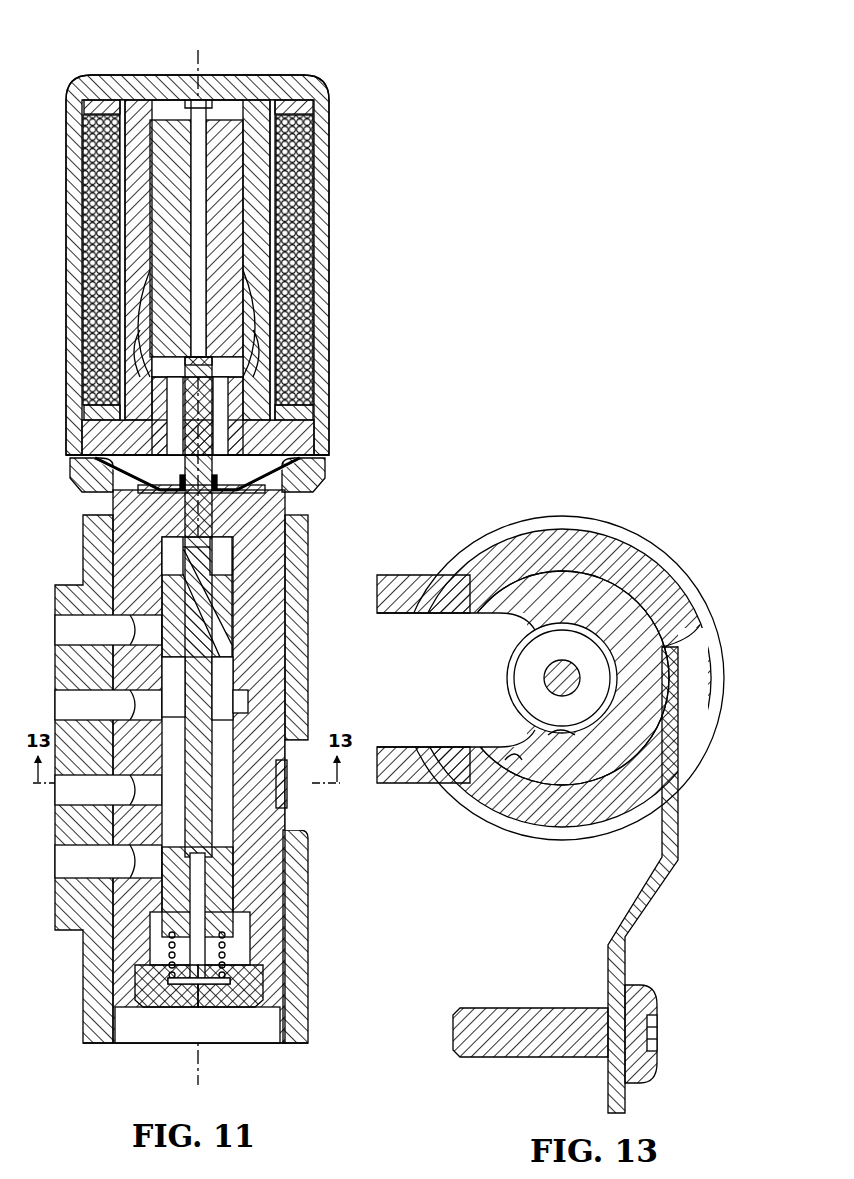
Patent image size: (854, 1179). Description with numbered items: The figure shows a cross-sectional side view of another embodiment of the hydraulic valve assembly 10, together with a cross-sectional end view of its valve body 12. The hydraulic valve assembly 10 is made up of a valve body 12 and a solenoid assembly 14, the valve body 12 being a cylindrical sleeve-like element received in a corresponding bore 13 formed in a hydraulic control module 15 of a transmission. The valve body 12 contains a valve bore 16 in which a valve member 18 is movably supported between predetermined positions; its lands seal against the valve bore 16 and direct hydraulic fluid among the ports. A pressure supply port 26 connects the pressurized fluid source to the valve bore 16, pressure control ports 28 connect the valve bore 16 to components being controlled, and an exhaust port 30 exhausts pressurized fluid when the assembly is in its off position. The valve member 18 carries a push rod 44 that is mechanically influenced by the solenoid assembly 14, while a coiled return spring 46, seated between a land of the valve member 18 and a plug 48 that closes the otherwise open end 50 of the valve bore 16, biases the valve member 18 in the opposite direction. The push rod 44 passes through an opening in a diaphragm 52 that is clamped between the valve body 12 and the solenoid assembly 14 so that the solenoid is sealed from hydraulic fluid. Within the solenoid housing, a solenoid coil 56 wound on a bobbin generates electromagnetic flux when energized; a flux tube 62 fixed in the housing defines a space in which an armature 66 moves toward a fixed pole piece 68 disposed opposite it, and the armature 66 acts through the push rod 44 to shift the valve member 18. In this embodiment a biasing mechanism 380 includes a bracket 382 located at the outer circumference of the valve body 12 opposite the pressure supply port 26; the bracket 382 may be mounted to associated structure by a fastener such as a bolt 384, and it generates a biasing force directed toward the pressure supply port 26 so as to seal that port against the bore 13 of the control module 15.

In FIG. 11, the hydraulic valve assembly 10 is at (292, 52).
In FIG. 11, the valve body 12 is at (270, 542).
In FIG. 13, the valve body 12 is at (595, 585).
In FIG. 11, the bore 13 is at (275, 912).
In FIG. 13, the bore 13 is at (517, 763).
In FIG. 11, the solenoid assembly 14 is at (62, 118).
In FIG. 11, the hydraulic control module 15 is at (95, 553).
In FIG. 13, the hydraulic control module 15 is at (510, 548).
In FIG. 11, the valve bore 16 is at (230, 830).
In FIG. 13, the valve bore 16 is at (570, 735).
In FIG. 11, the valve member 18 is at (205, 600).
In FIG. 13, the valve member 18 is at (520, 678).
In FIG. 11, the pressure supply port 26 is at (65, 780).
In FIG. 13, the pressure supply port 26 is at (405, 612).
In FIG. 11, the pressure control port 28 is at (72, 700).
In FIG. 11, the exhaust port 30 is at (82, 635).
In FIG. 11, the push rod 44 is at (205, 410).
In FIG. 11, the coiled return spring 46 is at (170, 935).
In FIG. 11, the plug 48 is at (160, 990).
In FIG. 11, the open end 50 is at (250, 980).
In FIG. 11, the diaphragm 52 is at (143, 483).
In FIG. 11, the solenoid coil 56 is at (300, 195).
In FIG. 11, the flux tube 62 is at (133, 238).
In FIG. 11, the armature 66 is at (230, 135).
In FIG. 11, the pole piece 68 is at (140, 375).
In FIG. 11, the biasing mechanism 380 is at (318, 765).
In FIG. 13, the biasing mechanism 380 is at (718, 605).
In FIG. 11, the bracket 382 is at (290, 785).
In FIG. 13, the bracket 382 is at (675, 830).
In FIG. 13, the bolt 384 is at (650, 990).